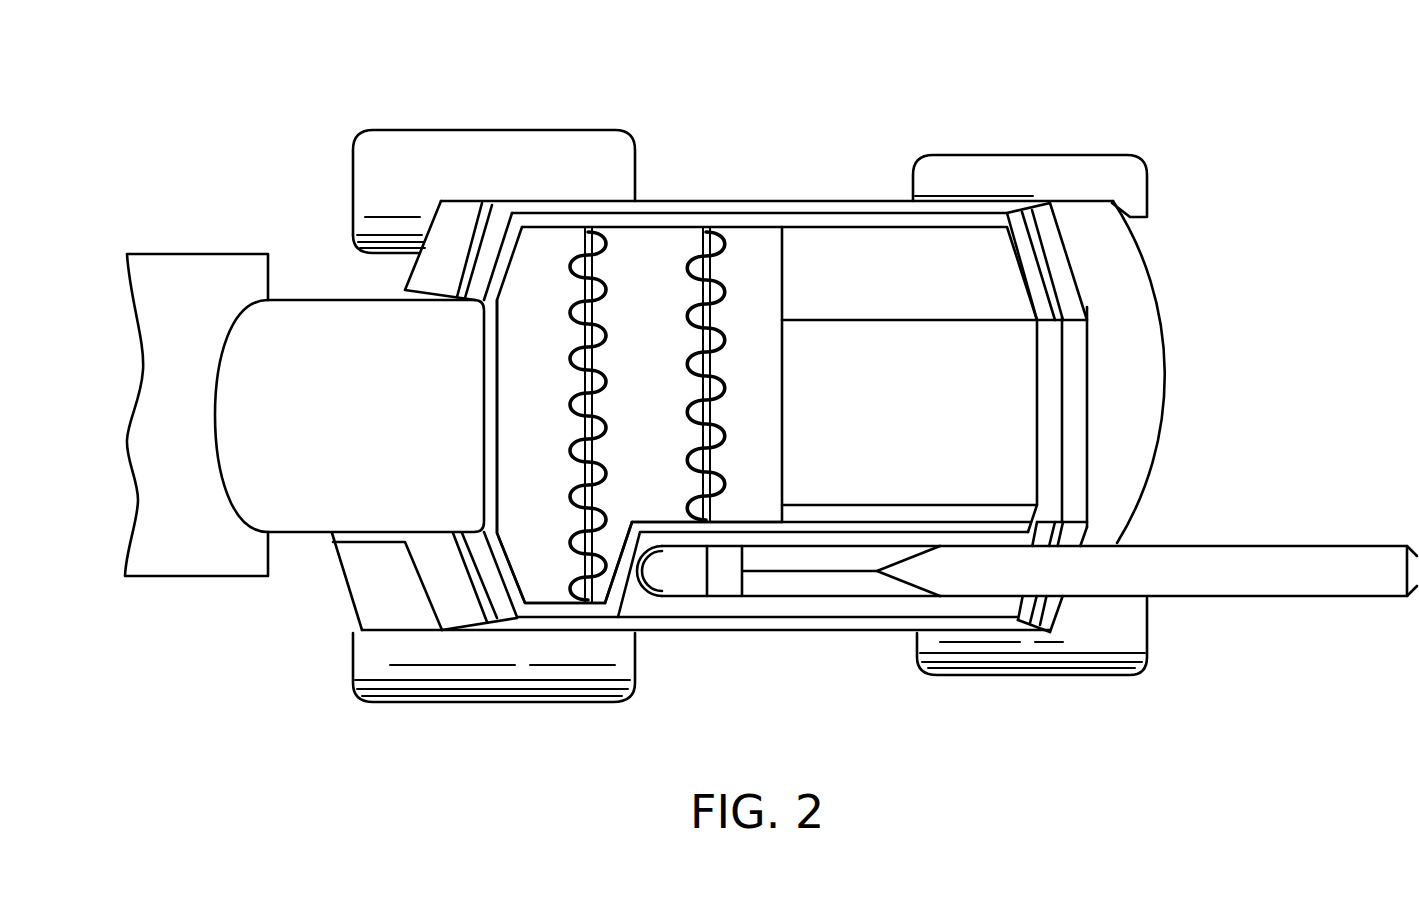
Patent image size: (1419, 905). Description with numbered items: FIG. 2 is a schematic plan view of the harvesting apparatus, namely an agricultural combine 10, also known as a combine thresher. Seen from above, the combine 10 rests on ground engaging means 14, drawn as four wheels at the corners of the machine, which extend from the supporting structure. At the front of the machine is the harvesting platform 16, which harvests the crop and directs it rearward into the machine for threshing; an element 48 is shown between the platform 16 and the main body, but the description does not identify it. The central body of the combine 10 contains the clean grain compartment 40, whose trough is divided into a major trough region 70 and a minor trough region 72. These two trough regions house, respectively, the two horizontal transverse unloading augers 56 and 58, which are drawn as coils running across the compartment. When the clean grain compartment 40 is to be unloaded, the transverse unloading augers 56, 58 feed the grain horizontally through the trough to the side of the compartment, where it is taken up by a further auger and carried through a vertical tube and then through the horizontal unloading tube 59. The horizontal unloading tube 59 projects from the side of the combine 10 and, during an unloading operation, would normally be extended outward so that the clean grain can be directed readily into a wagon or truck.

The agricultural combine 10 is at (988, 78).
The ground engaging means 14 is at (447, 130).
The harvesting platform 16 is at (138, 393).
The clean grain compartment 40 is at (790, 405).
The bumper head 48 is at (305, 505).
The transverse unloading auger 56 is at (603, 280).
The transverse unloading auger 58 is at (720, 280).
The horizontal unloading tube 59 is at (1237, 598).
The major trough region 70 is at (552, 400).
The minor trough region 72 is at (770, 379).